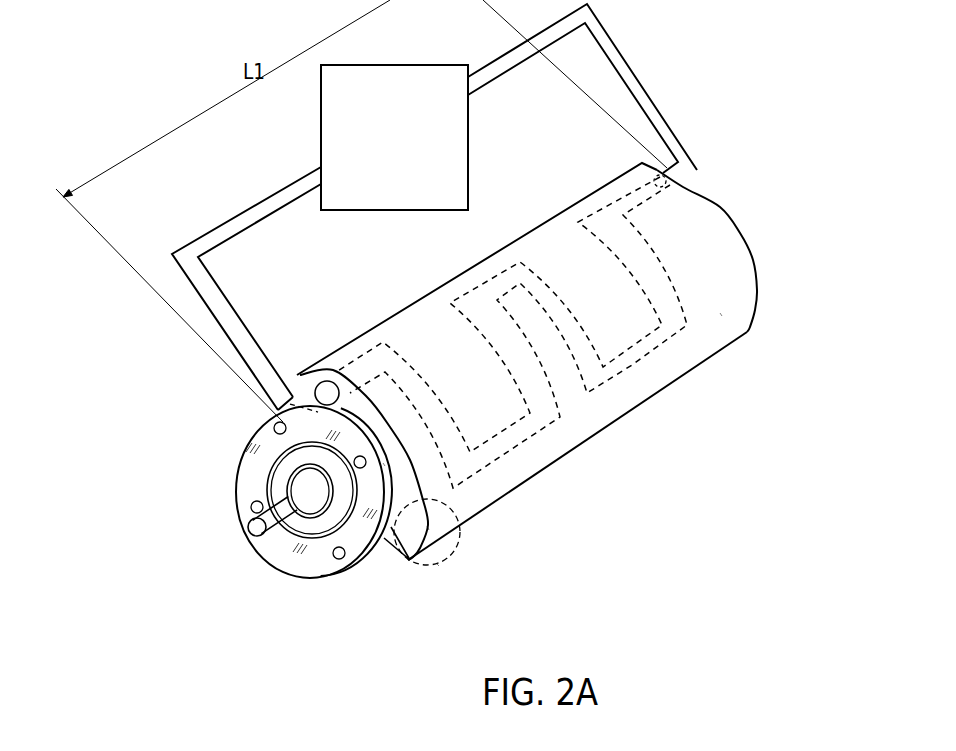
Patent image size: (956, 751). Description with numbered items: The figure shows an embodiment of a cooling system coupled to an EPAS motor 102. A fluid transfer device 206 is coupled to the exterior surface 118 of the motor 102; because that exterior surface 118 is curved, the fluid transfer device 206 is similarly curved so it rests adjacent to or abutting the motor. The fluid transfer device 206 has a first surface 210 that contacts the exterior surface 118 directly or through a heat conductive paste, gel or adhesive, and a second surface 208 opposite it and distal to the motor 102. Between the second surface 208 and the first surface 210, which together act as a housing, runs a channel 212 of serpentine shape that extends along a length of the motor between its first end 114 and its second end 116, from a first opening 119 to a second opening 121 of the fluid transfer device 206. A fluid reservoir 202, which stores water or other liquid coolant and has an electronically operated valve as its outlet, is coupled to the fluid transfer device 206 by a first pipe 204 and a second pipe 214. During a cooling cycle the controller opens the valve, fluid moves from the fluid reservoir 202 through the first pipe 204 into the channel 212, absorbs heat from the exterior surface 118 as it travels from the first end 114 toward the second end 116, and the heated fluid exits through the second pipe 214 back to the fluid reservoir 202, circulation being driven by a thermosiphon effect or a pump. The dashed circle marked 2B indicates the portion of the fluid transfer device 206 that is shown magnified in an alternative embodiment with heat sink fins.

The EPAS motor 102 is at (243, 470).
The first end 114 is at (754, 244).
The second end 116 is at (383, 463).
The exterior surface 118 is at (385, 542).
The first opening 119 is at (322, 381).
The second opening 121 is at (660, 177).
The fluid reservoir 202 is at (321, 146).
The first pipe 204 is at (620, 45).
The fluid transfer device 206 is at (720, 313).
The second surface 208 is at (428, 527).
The first surface 210 is at (438, 565).
The channel 212 is at (643, 222).
The second pipe 214 is at (227, 292).
The detail view indicator 2B is at (463, 553).